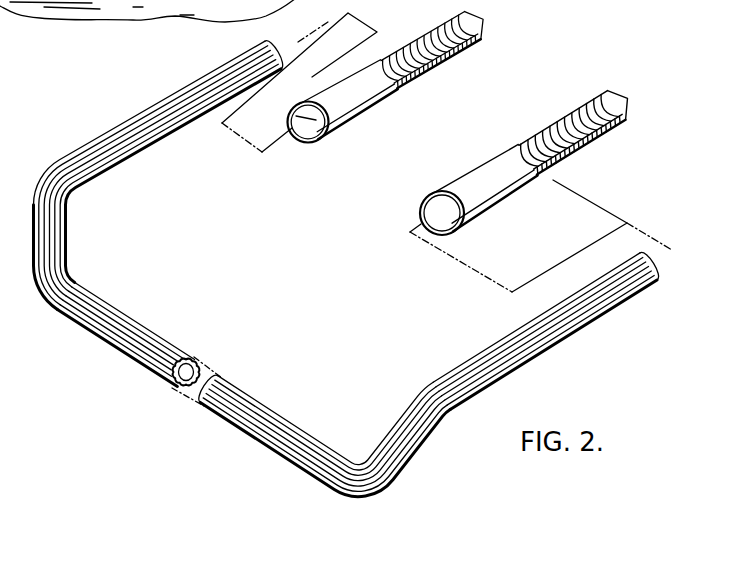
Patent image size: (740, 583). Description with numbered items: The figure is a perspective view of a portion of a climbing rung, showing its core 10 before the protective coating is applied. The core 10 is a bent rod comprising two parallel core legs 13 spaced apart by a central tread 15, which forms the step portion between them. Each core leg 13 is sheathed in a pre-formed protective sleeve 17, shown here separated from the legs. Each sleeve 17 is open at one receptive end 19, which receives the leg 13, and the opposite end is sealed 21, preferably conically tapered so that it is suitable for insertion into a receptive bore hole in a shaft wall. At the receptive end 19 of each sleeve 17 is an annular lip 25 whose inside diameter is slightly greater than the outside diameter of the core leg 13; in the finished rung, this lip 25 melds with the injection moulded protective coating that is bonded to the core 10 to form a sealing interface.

The core 10 is at (345, 289).
The core leg 13 is at (113, 128).
The central tread 15 is at (115, 355).
The pre-formed protective sleeve 17 is at (383, 110).
The receptive end 19 is at (436, 209).
The sealed end 21 is at (623, 95).
The annular lip 25 is at (311, 147).